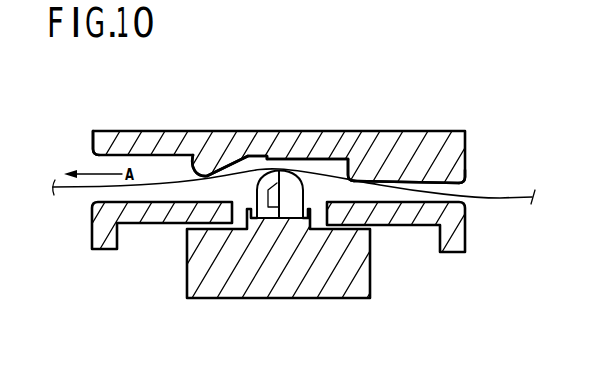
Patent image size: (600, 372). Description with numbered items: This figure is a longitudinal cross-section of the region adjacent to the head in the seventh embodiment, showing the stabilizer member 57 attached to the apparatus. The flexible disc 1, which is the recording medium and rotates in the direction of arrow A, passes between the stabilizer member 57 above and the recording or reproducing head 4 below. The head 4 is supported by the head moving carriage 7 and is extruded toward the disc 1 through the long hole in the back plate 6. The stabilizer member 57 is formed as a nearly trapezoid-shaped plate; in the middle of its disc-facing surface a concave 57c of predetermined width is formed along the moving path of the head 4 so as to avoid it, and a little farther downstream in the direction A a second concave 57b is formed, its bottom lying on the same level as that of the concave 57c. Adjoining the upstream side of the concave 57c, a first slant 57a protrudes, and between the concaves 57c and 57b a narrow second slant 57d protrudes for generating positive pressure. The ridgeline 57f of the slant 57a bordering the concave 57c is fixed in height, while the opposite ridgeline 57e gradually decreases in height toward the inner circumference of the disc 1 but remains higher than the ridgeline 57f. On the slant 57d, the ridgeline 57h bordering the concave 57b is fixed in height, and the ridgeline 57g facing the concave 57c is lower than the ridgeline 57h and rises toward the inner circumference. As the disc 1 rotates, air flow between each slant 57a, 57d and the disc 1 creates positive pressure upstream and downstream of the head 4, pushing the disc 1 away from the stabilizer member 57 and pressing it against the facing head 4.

The flexible disc 1 is at (483, 200).
The recording or reproducing head 4 is at (288, 210).
The back plate 6 is at (105, 250).
The head moving carriage 7 is at (310, 288).
The stabilizer member 57 is at (448, 126).
The first slant 57a is at (402, 180).
The second concave 57b is at (117, 131).
The concave 57c is at (317, 158).
The second slant 57d is at (233, 166).
The ridgeline 57e is at (474, 177).
The ridgeline 57f is at (340, 159).
The ridgeline 57g is at (272, 156).
The ridgeline 57h is at (195, 167).